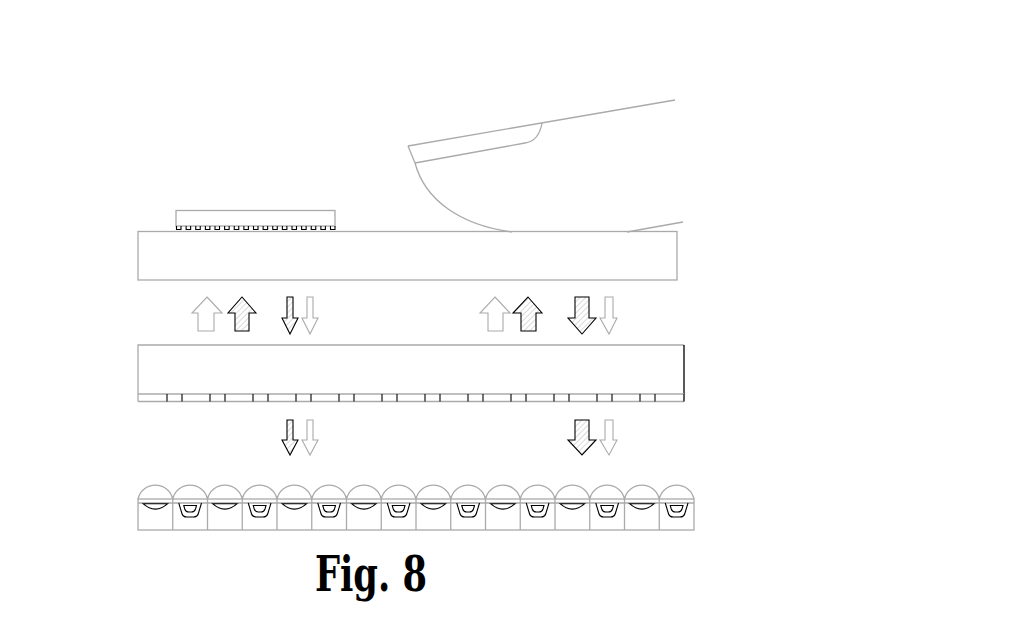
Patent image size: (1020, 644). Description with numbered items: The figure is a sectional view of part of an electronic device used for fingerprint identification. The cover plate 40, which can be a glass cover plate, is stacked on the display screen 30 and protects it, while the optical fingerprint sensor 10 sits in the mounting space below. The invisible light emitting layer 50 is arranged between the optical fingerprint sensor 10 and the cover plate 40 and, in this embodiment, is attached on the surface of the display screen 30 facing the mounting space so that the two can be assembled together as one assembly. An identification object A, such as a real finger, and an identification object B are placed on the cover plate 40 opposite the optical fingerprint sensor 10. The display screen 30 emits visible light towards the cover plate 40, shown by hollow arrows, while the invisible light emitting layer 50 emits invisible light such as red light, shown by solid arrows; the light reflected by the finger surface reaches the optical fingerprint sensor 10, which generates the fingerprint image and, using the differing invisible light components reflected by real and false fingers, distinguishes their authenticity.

The optical fingerprint sensor 10 is at (152, 520).
The display screen 30 is at (158, 372).
The cover plate 40 is at (185, 257).
The invisible light emitting layer 50 is at (150, 398).
The finger A is at (590, 163).
The object / fingerprint chip B is at (280, 217).